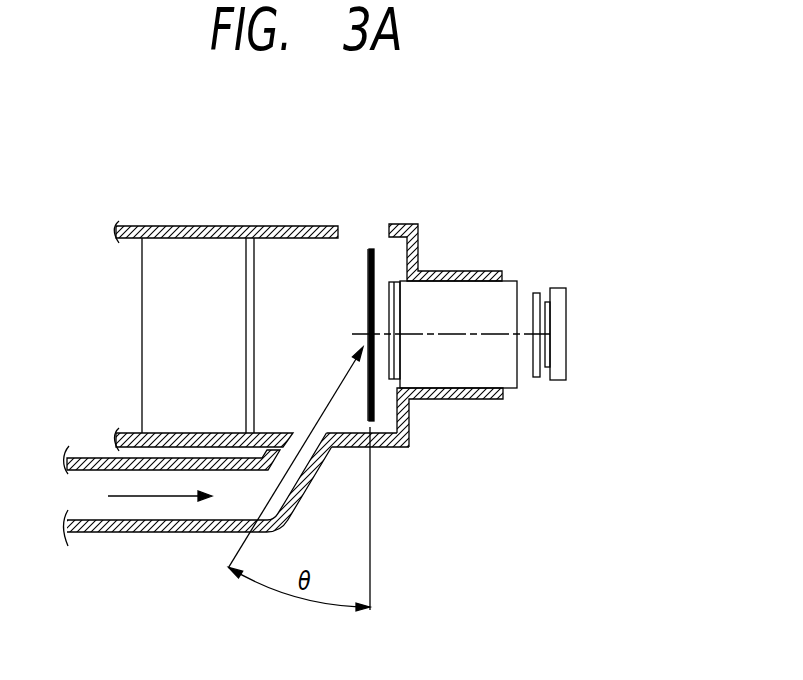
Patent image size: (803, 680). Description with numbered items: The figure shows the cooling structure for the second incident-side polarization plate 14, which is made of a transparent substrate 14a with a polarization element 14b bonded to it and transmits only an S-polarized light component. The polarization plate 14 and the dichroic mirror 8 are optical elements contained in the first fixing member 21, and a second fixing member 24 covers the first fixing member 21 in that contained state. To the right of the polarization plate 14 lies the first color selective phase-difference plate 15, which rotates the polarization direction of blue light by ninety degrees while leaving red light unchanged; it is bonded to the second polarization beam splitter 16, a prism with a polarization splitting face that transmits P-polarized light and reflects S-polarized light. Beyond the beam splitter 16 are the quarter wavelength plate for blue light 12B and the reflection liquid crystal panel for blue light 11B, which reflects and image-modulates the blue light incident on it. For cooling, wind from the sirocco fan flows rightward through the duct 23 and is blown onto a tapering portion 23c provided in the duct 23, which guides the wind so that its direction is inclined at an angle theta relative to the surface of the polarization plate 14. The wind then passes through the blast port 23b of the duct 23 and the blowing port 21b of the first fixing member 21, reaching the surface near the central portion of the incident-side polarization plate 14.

The dichroic mirror 8 is at (163, 317).
The second fixing member 24 is at (220, 226).
The second incident-side polarization plate 14 is at (428, 141).
The transparent substrate 14a is at (372, 249).
The polarization element 14b is at (368, 283).
The first color selective phase-difference plate 15 is at (394, 293).
The second polarization beam splitter 16 is at (481, 293).
The quarter wavelength plate for blue light 12B is at (537, 293).
The reflection liquid crystal panel for blue light 11B is at (558, 301).
The first fixing member 21 is at (242, 447).
The blowing port 21b is at (330, 440).
The duct 23 is at (92, 513).
The blast port 23b is at (295, 470).
The tapering portion 23c is at (321, 475).